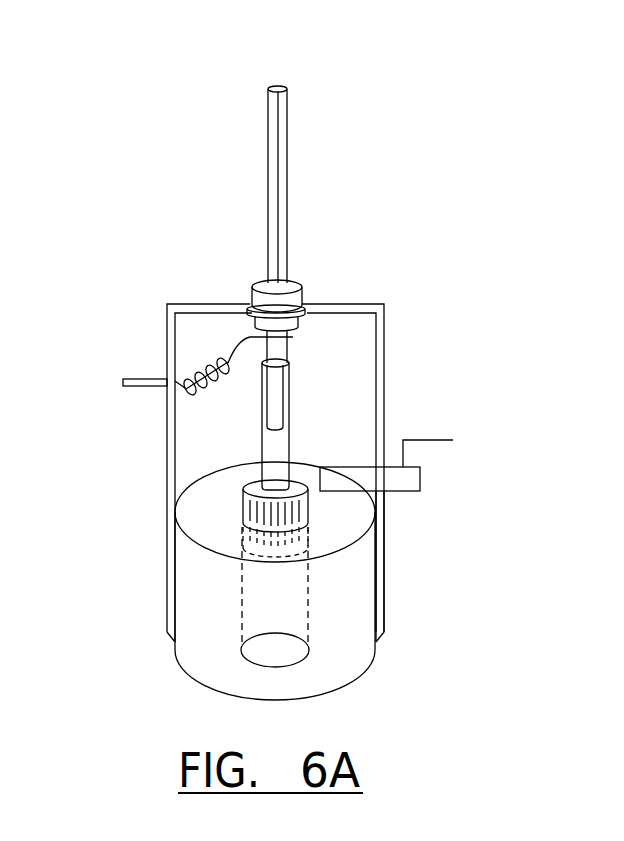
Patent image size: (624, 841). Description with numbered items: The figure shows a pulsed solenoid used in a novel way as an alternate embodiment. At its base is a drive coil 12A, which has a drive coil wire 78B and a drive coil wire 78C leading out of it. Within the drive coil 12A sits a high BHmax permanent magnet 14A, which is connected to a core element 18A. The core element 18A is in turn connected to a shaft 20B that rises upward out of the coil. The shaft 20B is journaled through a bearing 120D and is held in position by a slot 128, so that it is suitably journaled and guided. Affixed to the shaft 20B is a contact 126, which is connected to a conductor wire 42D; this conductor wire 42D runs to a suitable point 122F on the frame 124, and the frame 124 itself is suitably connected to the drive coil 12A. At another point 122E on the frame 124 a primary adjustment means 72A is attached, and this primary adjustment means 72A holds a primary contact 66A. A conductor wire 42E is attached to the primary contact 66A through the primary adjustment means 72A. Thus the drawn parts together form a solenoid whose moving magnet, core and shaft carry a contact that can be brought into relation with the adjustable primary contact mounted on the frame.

The slot 128 is at (278, 102).
The shaft 20B is at (278, 167).
The frame 124 is at (232, 304).
The bearing 120D is at (277, 295).
The contact 126 is at (300, 335).
The point on frame 122F is at (165, 375).
The conductor wire 42D is at (132, 377).
The primary contact 66A is at (300, 472).
The primary adjustment means 72A is at (347, 477).
The conductor wire 42E is at (428, 442).
The core element 18A is at (267, 473).
The permanent magnet 14A is at (252, 490).
The point on frame 122E is at (385, 498).
The drive coil 12A is at (190, 600).
The drive coil wire 78C is at (317, 520).
The drive coil wire 78B is at (332, 685).